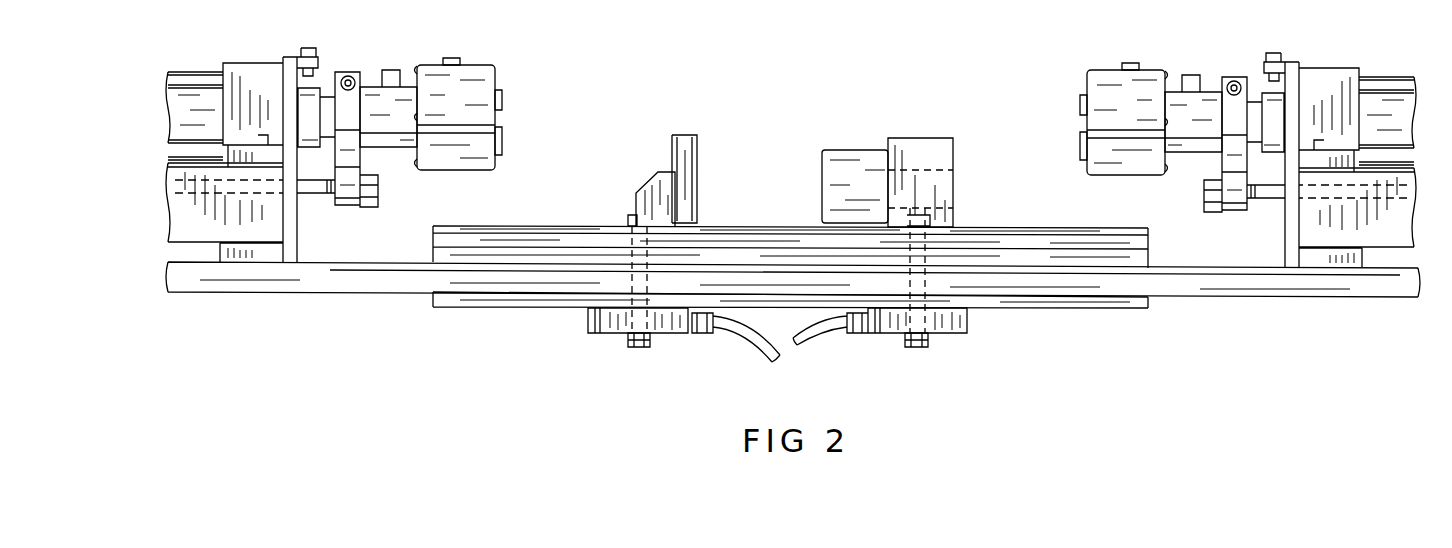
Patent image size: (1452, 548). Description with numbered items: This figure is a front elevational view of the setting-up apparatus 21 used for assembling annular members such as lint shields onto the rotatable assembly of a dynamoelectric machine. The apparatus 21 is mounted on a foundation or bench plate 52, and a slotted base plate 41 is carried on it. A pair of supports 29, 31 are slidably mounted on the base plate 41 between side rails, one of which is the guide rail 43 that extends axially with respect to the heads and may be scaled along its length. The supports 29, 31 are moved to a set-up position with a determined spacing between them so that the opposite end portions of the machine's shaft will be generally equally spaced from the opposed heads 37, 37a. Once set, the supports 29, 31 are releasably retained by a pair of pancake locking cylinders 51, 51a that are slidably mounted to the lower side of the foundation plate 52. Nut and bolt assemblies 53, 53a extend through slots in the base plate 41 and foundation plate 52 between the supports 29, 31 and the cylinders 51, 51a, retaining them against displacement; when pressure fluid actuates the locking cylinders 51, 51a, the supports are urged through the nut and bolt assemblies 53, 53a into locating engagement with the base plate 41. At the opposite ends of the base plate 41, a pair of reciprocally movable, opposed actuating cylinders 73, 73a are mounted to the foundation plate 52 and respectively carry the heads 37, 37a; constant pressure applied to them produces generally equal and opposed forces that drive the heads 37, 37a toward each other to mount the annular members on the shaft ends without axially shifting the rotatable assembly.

The apparatus 21 is at (760, 177).
The support 29 is at (643, 183).
The support 31 is at (958, 179).
The head 37 is at (487, 60).
The head 37a is at (1105, 56).
The base plate 41 is at (436, 255).
The guide rail 43 is at (433, 237).
The locking cylinder 51 is at (600, 325).
The locking cylinder 51a is at (965, 335).
The foundation plate 52 is at (365, 283).
The nut and bolt assembly 53 is at (642, 347).
The nut and bolt assembly 53a is at (912, 350).
The actuating cylinder 73 is at (249, 60).
The actuating cylinder 73a is at (1332, 60).